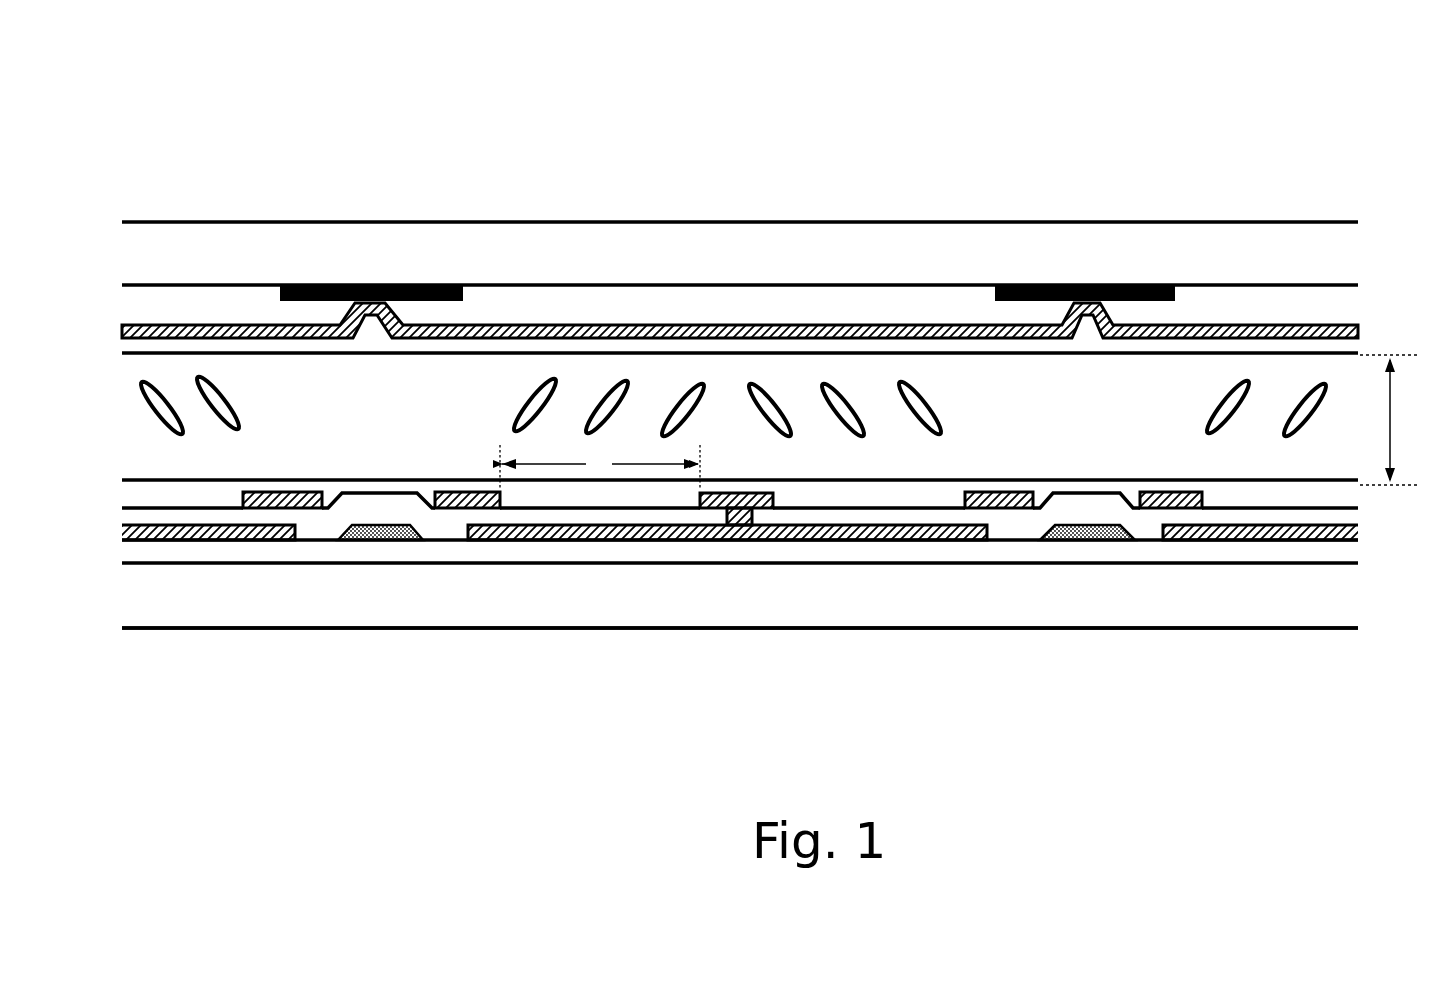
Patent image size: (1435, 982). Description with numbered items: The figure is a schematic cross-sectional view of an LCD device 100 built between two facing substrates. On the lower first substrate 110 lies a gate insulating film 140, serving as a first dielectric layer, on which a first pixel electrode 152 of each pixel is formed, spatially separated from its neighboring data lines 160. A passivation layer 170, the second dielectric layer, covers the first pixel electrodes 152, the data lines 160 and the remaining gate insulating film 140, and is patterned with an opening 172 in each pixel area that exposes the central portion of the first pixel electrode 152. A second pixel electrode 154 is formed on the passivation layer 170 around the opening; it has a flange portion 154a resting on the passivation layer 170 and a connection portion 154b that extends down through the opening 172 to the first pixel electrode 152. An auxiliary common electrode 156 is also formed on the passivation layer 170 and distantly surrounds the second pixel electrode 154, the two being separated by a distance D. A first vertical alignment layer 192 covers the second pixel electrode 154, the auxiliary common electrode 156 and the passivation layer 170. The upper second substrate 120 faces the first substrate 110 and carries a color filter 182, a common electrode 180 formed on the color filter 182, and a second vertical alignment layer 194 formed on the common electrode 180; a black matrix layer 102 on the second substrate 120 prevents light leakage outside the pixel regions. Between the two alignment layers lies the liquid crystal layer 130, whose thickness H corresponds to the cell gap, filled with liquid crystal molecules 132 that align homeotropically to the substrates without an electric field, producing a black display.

The LCD device 100 is at (771, 71).
The black matrix layer 102 is at (378, 298).
The first substrate 110 is at (832, 610).
The second substrate 120 is at (782, 250).
The liquid crystal layer 130 is at (885, 415).
The liquid crystal molecules 132 is at (940, 420).
The gate insulating film 140 is at (958, 560).
The first pixel electrode 152 is at (180, 541).
The second pixel electrode 154 is at (740, 493).
The flange portion 154a is at (776, 503).
The connection portion 154b is at (735, 541).
The auxiliary common electrode 156 is at (300, 492).
The data line 160 is at (370, 541).
The passivation layer 170 is at (380, 508).
The opening 172 is at (725, 515).
The common electrode 180 is at (548, 325).
The color filter 182 is at (662, 303).
The first vertical alignment layer 192 is at (1310, 497).
The second vertical alignment layer 194 is at (1265, 350).